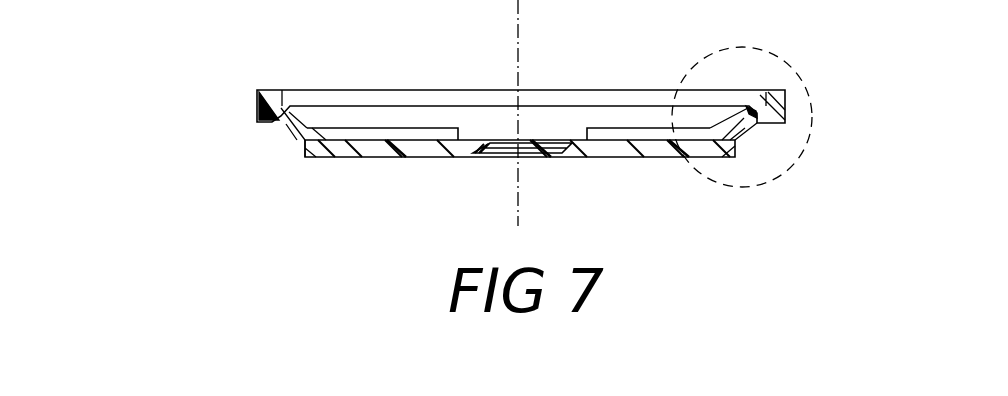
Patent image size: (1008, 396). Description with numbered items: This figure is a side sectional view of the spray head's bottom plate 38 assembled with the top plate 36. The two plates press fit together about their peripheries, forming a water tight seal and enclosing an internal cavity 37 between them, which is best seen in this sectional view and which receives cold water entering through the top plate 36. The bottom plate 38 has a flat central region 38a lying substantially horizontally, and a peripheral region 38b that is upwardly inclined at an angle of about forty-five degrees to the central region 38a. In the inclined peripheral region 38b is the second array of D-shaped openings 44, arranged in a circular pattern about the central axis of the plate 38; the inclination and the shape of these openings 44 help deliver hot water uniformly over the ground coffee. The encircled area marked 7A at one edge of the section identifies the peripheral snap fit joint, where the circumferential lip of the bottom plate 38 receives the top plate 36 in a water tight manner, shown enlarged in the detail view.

The top plate 36 is at (318, 90).
The internal cavity 37 is at (578, 134).
The bottom plate 38 is at (660, 160).
The flat central region 38a is at (256, 90).
The peripheral region 38b is at (300, 128).
The D-shaped openings 44 is at (305, 146).
The detail area 7A is at (808, 70).